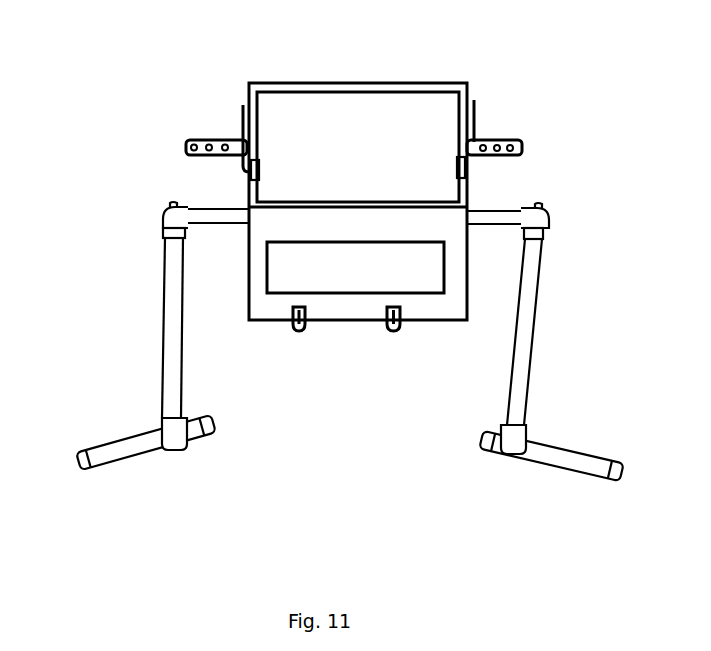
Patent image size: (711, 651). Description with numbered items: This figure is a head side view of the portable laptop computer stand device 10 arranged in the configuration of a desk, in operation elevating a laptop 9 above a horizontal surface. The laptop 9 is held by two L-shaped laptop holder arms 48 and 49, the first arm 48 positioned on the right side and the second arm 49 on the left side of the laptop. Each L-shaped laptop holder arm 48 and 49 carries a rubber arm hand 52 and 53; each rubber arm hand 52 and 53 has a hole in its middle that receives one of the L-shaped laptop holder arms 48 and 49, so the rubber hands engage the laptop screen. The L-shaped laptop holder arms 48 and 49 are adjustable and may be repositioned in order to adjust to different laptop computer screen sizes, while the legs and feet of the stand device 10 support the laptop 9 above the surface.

The laptop 9 is at (308, 125).
The portable laptop computer stand device 10 is at (568, 200).
The first L-shaped laptop holder arm 48 is at (477, 115).
The second L-shaped laptop holder arm 49 is at (242, 125).
The rubber arm hand 52 is at (251, 177).
The rubber arm hand 53 is at (468, 168).